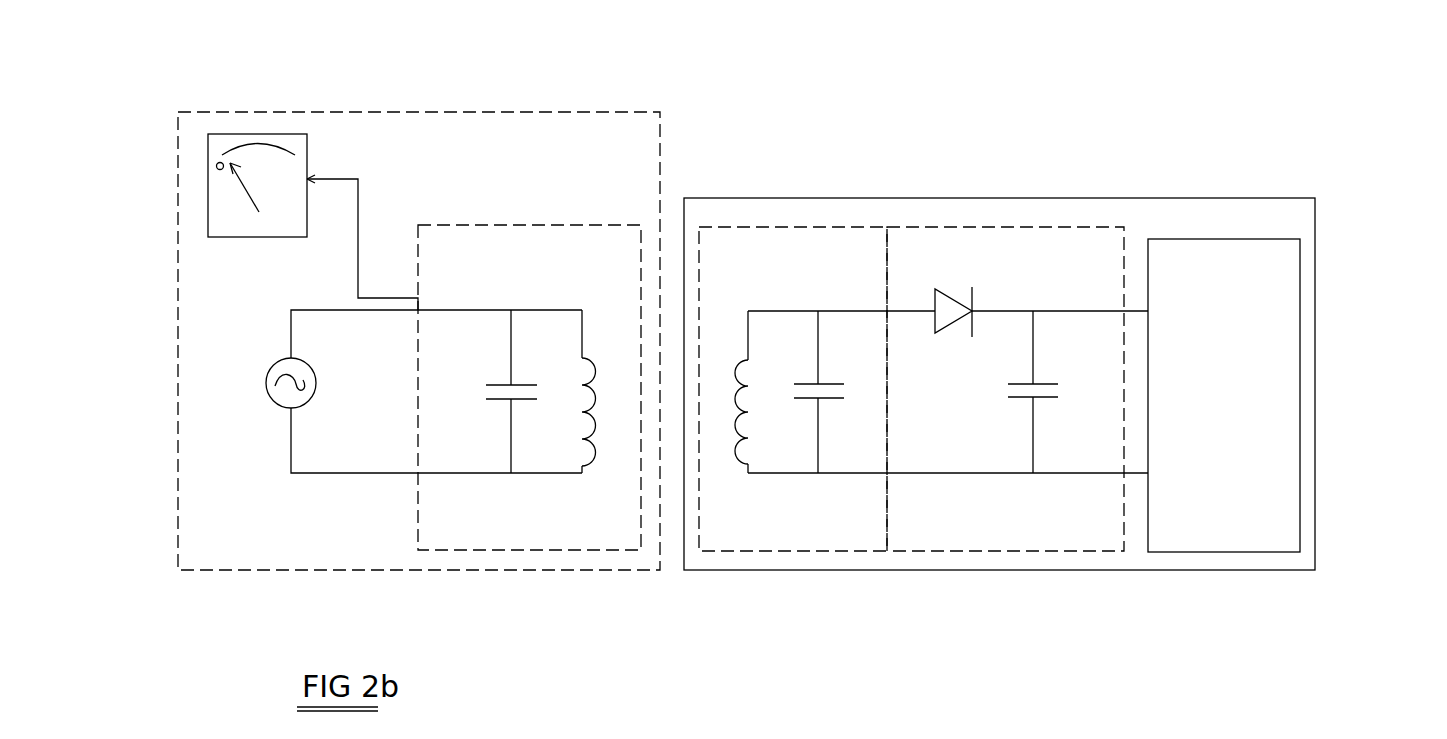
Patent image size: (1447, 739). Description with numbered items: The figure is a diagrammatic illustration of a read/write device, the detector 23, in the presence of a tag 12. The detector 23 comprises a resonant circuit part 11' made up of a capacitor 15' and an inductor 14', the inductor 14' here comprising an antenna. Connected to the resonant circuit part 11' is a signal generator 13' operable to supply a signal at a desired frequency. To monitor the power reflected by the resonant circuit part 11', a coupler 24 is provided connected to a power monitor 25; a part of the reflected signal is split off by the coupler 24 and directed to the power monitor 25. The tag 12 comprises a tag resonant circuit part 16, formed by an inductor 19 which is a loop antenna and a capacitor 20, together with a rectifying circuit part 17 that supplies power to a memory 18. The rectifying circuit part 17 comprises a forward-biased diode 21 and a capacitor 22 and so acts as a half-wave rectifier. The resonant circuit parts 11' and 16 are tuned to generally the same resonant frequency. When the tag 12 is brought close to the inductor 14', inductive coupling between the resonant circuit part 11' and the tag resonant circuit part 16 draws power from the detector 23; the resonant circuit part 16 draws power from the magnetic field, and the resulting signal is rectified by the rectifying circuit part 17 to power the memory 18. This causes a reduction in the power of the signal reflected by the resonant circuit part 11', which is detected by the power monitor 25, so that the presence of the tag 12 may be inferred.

The tag 12 is at (1203, 183).
The resonant circuit part 16 is at (852, 551).
The rectifying circuit part 17 is at (1072, 551).
The memory 18 is at (1300, 312).
The inductor 19 is at (735, 370).
The capacitor 20 is at (797, 384).
The forward-biased diode 21 is at (947, 295).
The capacitor 22 is at (1038, 384).
The detector 23 is at (515, 112).
The resonant circuit part 11' is at (534, 333).
The signal generator 13' is at (263, 427).
The inductor 14' is at (604, 476).
The capacitor 15' is at (516, 478).
The coupler 24 is at (358, 298).
The power monitor 25 is at (240, 134).